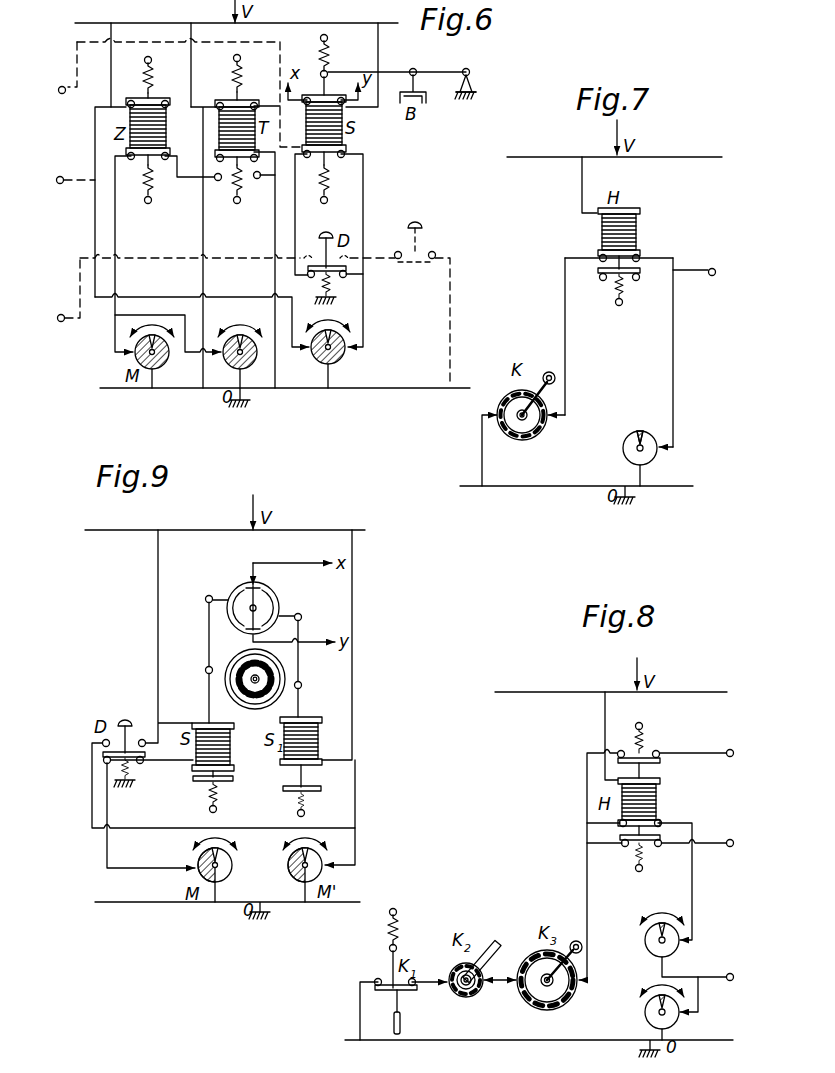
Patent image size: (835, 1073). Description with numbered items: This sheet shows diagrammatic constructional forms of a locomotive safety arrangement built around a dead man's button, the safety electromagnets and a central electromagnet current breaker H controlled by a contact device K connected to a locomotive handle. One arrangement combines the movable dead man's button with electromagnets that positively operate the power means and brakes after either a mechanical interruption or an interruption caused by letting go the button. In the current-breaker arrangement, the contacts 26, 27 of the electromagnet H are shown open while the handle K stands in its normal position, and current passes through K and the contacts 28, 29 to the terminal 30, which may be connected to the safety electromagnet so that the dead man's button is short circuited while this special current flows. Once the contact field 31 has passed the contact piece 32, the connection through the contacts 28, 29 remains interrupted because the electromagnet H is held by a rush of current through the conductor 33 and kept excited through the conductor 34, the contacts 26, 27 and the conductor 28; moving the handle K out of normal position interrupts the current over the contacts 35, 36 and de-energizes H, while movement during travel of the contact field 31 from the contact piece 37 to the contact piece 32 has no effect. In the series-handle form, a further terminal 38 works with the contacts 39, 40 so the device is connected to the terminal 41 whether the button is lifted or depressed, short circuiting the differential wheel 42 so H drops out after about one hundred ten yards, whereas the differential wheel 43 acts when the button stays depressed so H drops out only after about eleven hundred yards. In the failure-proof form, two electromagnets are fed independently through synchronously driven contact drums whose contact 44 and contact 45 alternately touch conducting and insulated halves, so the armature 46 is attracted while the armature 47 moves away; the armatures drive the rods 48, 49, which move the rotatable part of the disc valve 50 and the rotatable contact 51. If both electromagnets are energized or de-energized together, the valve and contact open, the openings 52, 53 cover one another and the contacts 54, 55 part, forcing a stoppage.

In FIG. 6, the terminal 38 is at (56, 68).
In FIG. 8, the terminal 38 is at (732, 751).
In FIG. 6, the terminal 30 is at (65, 168).
In FIG. 7, the terminal 30 is at (706, 261).
In FIG. 8, the terminal 30 is at (733, 841).
In FIG. 6, the terminal 41 is at (58, 290).
In FIG. 8, the terminal 41 is at (733, 975).
In FIG. 7, the contact 28 is at (582, 187).
In FIG. 7, the contact of electromagnet H 26 is at (600, 255).
In FIG. 7, the contact of electromagnet H 27 is at (641, 256).
In FIG. 7, the contact 29 is at (640, 281).
In FIG. 7, the conductor 34 is at (567, 346).
In FIG. 7, the conductor 33 is at (674, 353).
In FIG. 7, the contact 35 is at (492, 410).
In FIG. 7, the contact 36 is at (556, 420).
In FIG. 7, the contact field 31 is at (641, 425).
In FIG. 7, the contact piece 37 is at (626, 448).
In FIG. 7, the contact piece 32 is at (674, 461).
In FIG. 9, the contact 54 is at (244, 590).
In FIG. 9, the contact 55 is at (258, 588).
In FIG. 9, the rotatable contact 51 is at (281, 603).
In FIG. 9, the opening 53 is at (248, 630).
In FIG. 9, the opening 52 is at (232, 668).
In FIG. 9, the disc valve 50 is at (287, 676).
In FIG. 9, the rod 48 is at (205, 699).
In FIG. 9, the rod 49 is at (317, 700).
In FIG. 9, the armature 46 is at (195, 778).
In FIG. 9, the armature 47 is at (322, 790).
In FIG. 9, the contact 44 is at (196, 862).
In FIG. 9, the contact 45 is at (315, 860).
In FIG. 8, the contact 39 is at (620, 752).
In FIG. 8, the contact 40 is at (659, 752).
In FIG. 8, the differential wheel 43 is at (655, 935).
In FIG. 8, the differential wheel 42 is at (651, 1007).